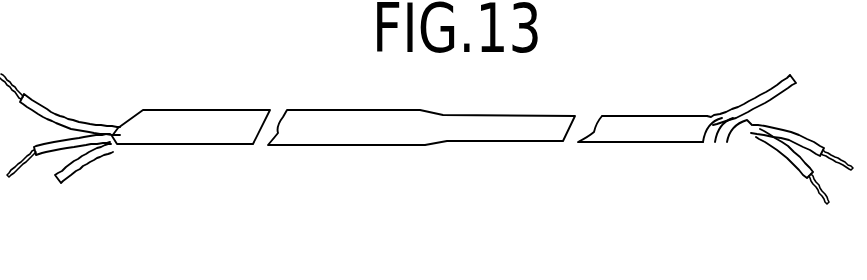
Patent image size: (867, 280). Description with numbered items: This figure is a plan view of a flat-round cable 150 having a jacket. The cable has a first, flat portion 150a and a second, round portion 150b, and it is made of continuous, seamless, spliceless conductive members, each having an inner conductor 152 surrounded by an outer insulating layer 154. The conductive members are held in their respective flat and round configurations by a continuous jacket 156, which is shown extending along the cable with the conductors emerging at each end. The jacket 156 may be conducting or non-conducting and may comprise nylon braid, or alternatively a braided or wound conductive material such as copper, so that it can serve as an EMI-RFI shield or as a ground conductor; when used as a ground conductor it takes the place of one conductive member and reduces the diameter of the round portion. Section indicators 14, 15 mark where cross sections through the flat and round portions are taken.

The flat-round cable 150 is at (385, 100).
The first, flat portion 150a is at (160, 130).
The second, round portion 150b is at (530, 130).
The inner conductor 152 is at (10, 82).
The outer insulating layer 154 is at (47, 100).
The continuous jacket 156 is at (67, 177).
The section line 14- 14 is at (202, 103).
The section line 15- 15 is at (673, 52).